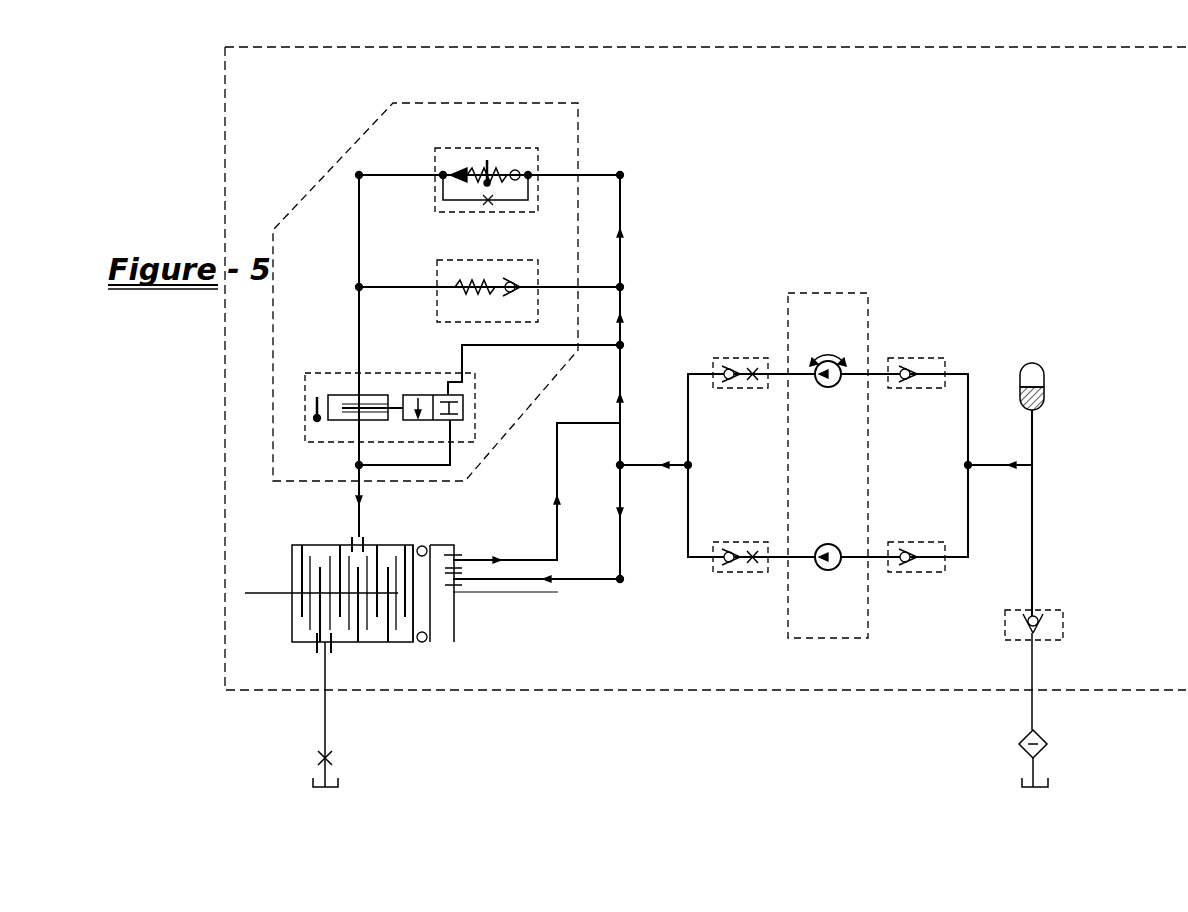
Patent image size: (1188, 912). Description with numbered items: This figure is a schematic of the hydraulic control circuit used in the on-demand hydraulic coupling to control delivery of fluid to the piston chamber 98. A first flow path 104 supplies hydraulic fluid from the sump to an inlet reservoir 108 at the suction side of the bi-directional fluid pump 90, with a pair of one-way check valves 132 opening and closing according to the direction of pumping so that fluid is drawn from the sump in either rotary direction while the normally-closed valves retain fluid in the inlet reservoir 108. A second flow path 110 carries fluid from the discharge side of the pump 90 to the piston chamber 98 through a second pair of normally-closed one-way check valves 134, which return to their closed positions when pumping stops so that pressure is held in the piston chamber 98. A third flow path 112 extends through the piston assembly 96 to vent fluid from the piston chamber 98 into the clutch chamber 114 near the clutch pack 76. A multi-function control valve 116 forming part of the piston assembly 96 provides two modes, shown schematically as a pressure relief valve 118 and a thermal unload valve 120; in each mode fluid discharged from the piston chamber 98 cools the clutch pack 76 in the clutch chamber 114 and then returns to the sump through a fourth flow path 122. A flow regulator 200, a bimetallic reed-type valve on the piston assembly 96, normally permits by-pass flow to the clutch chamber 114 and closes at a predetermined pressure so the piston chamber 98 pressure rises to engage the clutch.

The clutch pack 76 is at (398, 536).
The fluid pump 90 is at (832, 642).
The piston assembly 96 is at (422, 612).
The piston chamber 98 is at (438, 538).
The first flow path 104 is at (1032, 535).
The inlet reservoir 108 is at (1036, 375).
The second flow path 110 is at (592, 582).
The third flow path 112 is at (626, 372).
The clutch chamber 114 is at (317, 550).
The multi-function control valve 116 is at (580, 142).
The pressure relief valve 118 is at (440, 275).
The thermal unload valve 120 is at (333, 373).
The fourth flow path 122 is at (325, 722).
The one-way check valve 132 is at (924, 360).
The one-way check valve 134 is at (738, 359).
The flow regulator 200 is at (440, 162).